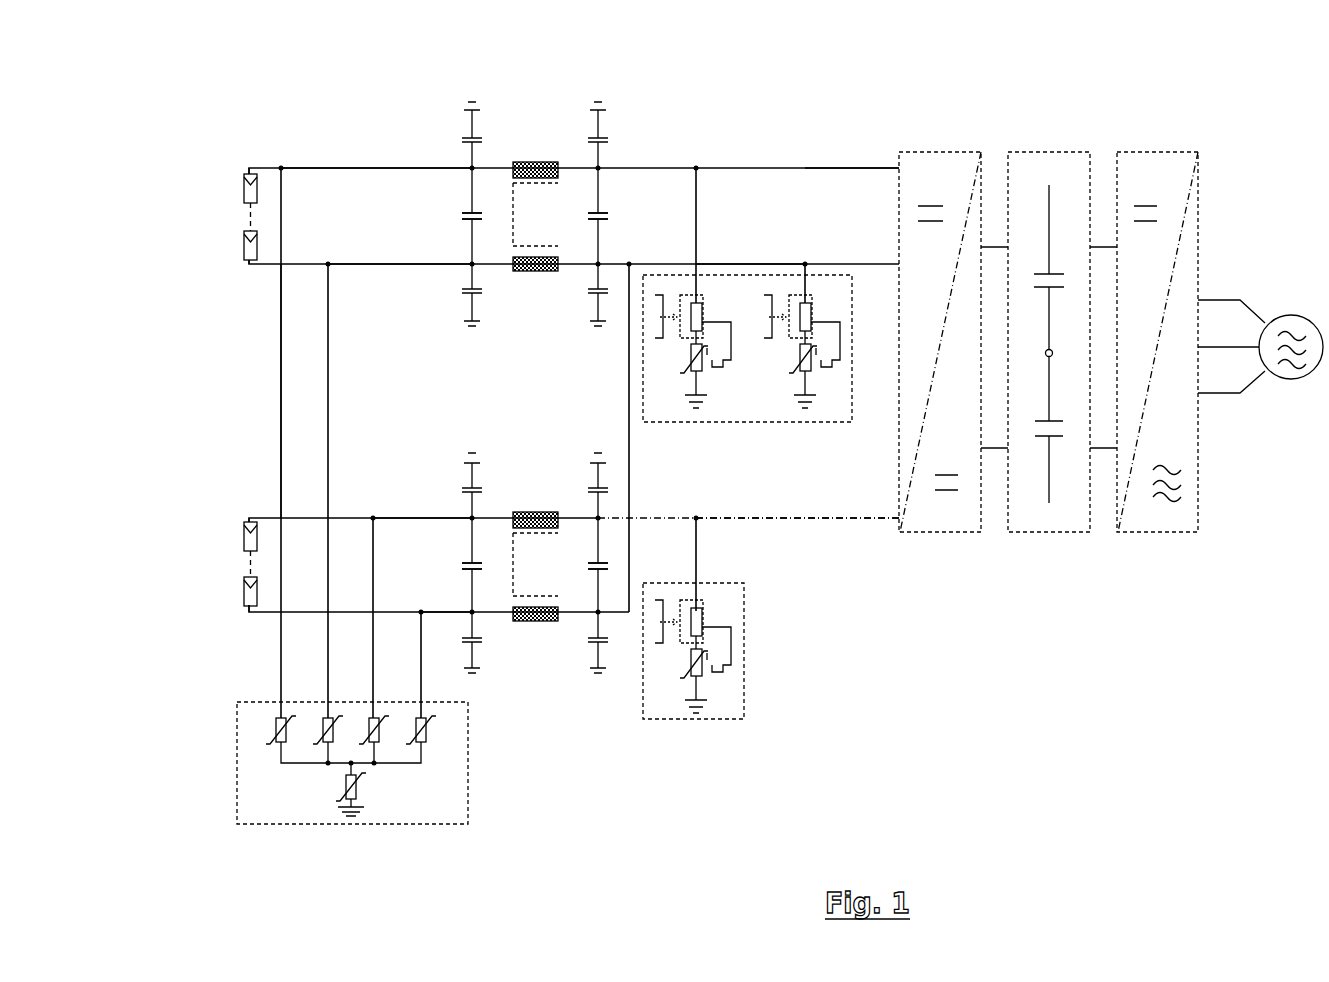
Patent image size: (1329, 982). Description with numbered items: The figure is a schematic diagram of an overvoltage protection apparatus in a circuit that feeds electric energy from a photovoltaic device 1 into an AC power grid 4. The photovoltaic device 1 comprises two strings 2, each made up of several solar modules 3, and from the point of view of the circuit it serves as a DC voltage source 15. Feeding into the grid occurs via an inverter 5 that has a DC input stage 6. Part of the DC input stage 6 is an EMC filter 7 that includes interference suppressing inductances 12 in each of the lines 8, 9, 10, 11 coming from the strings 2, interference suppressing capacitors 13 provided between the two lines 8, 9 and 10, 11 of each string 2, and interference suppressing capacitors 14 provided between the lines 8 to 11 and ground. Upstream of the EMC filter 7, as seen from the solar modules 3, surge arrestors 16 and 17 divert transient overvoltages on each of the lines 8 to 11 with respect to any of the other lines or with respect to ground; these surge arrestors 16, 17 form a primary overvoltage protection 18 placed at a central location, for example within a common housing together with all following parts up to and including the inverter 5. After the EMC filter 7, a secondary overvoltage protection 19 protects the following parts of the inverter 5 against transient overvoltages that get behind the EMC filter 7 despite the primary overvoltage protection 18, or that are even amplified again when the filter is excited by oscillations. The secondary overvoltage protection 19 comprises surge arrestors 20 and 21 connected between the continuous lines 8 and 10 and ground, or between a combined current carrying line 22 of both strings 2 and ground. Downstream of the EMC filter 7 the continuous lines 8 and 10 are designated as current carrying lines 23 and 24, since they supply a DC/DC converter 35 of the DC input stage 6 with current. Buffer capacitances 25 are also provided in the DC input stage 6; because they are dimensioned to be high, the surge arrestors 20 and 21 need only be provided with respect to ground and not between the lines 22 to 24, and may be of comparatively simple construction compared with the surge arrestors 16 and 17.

The photovoltaic device 1 is at (232, 463).
The string 2 is at (240, 137).
The solar module 3 is at (243, 247).
The AC power grid 4 is at (1290, 316).
The inverter 5 is at (1138, 147).
The DC input stage 6 is at (735, 153).
The EMC filter 7 is at (598, 92).
The line 8 is at (330, 168).
The line 9 is at (363, 265).
The line 10 is at (390, 518).
The line 11 is at (445, 613).
The interference suppressing inductance 12 is at (535, 162).
The interference suppressing capacitor 13 is at (603, 213).
The interference suppressing capacitor 14 is at (463, 138).
The DC voltage source 15 is at (245, 292).
The surge arrestor 16 is at (322, 720).
The surge arrestor 17 is at (355, 798).
The primary overvoltage protection 18 is at (230, 773).
The secondary overvoltage protection 19 is at (750, 646).
The surge arrestor 20 is at (732, 288).
The surge arrestor 21 is at (838, 293).
The combined current carrying line 22 is at (783, 263).
The current carrying line 23 is at (885, 168).
The current carrying line 24 is at (765, 519).
The buffer capacitance 25 is at (1049, 274).
The DC/DC converter 35 is at (942, 148).